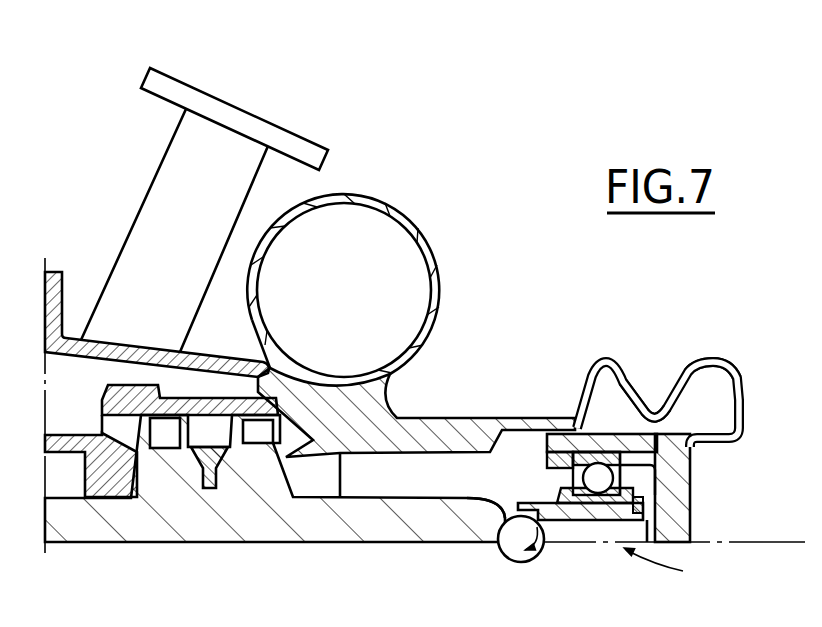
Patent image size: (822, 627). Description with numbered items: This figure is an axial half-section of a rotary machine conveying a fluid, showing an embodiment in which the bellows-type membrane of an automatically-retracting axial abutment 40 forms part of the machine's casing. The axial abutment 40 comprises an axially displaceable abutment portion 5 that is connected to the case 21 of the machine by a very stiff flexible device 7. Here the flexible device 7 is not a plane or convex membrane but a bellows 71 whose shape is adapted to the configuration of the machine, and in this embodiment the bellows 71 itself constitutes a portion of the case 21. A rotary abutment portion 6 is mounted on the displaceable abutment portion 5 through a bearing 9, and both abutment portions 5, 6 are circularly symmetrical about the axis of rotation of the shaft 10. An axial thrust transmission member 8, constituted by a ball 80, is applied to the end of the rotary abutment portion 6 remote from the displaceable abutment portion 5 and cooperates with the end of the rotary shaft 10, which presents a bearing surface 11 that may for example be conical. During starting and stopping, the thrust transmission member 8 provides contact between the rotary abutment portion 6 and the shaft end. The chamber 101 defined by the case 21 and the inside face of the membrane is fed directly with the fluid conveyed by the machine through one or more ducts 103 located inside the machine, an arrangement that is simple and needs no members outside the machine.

The axially displaceable abutment portion 5 is at (677, 483).
The rotary abutment portion 6 is at (640, 512).
The flexible device 7 is at (718, 355).
The axial thrust transmission member 8 is at (547, 556).
The bearing 9 is at (602, 465).
The shaft 10 is at (397, 512).
The bearing surface 11 is at (470, 504).
The case 21 is at (460, 417).
The axial abutment 40 is at (671, 567).
The bellows 71 is at (677, 385).
The ball 80 is at (512, 559).
The chamber 101 is at (708, 400).
The duct 103 is at (558, 430).